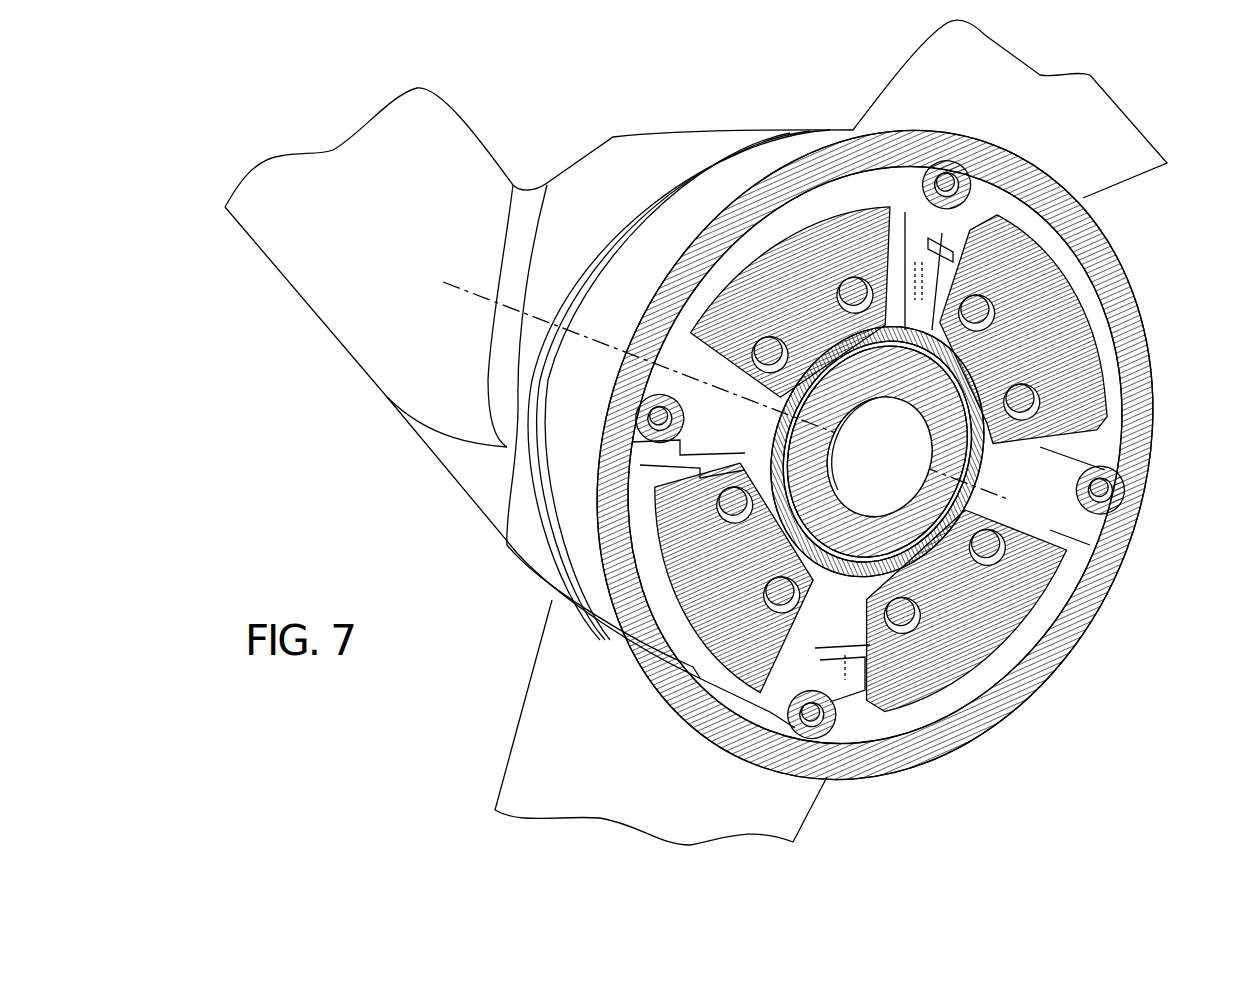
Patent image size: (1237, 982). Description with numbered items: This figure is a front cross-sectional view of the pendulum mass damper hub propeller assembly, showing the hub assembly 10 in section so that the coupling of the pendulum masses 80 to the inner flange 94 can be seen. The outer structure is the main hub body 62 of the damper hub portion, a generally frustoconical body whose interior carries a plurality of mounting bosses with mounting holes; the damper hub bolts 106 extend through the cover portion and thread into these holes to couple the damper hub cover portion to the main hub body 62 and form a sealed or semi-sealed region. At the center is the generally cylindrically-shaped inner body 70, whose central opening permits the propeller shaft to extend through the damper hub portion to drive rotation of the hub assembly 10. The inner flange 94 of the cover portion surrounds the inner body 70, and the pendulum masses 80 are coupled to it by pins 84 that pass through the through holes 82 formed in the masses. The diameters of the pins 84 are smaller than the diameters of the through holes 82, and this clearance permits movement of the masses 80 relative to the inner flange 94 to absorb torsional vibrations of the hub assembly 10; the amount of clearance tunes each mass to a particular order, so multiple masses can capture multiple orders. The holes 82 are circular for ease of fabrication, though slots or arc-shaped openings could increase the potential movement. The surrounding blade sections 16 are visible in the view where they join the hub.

The hub assembly 10 is at (270, 98).
The blade 16 is at (932, 58).
The main hub body 62 is at (618, 300).
The inner body 70 is at (913, 520).
The pendulum masses 80 is at (798, 250).
The through holes 82 is at (773, 358).
The pins 84 is at (857, 290).
The inner flange 94 is at (1000, 470).
The damper hub bolts 106 is at (947, 183).